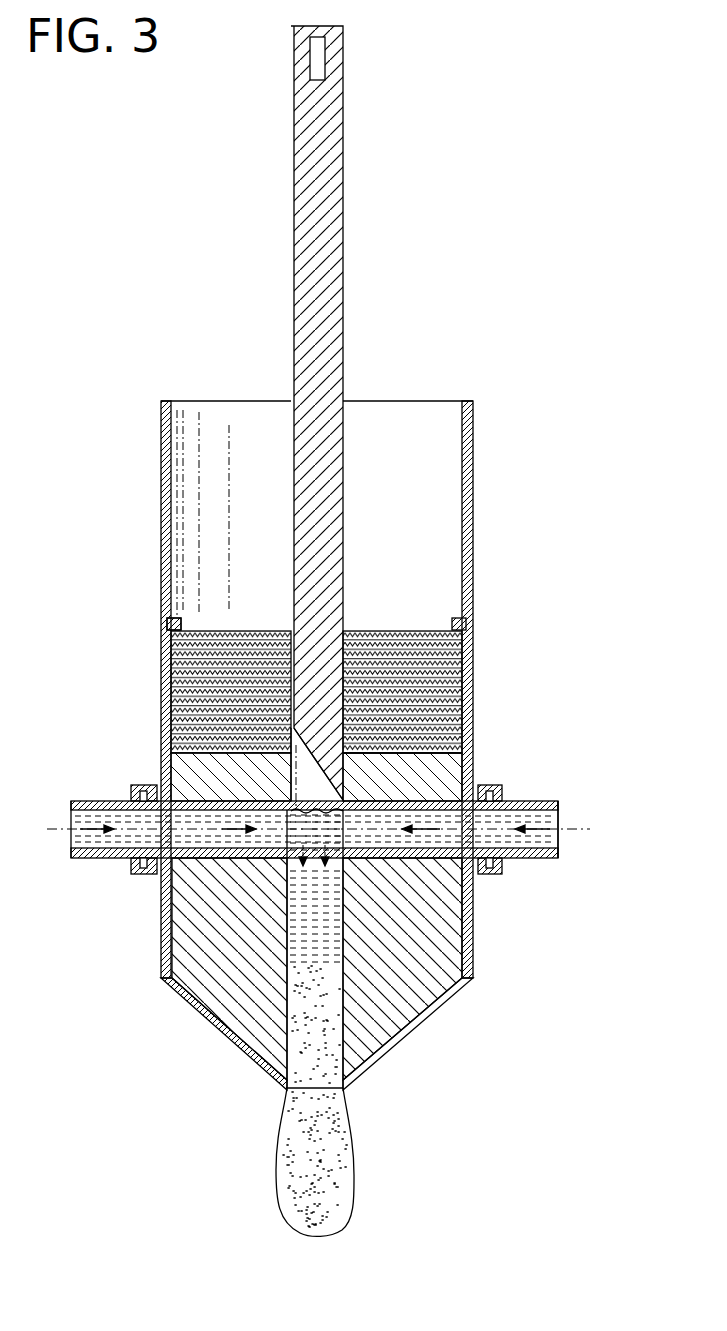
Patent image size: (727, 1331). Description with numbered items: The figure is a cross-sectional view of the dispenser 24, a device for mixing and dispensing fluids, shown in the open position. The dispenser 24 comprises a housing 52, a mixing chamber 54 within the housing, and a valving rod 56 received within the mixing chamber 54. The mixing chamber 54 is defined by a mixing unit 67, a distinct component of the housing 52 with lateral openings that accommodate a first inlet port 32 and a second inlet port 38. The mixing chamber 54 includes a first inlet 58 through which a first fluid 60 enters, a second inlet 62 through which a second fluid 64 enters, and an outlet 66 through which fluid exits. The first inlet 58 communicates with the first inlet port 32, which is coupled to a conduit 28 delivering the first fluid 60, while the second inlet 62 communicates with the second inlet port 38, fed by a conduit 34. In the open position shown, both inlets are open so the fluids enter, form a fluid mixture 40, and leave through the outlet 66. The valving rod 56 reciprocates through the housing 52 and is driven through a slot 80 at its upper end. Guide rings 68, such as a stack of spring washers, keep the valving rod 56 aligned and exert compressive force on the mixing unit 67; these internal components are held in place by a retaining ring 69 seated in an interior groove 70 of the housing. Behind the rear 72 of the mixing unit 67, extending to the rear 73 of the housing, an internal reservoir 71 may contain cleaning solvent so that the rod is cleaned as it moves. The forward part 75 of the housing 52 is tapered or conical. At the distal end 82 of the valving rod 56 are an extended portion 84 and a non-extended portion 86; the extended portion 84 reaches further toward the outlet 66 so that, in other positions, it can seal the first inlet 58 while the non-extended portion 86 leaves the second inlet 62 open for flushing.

The dispenser 24 is at (532, 271).
The conduit 28 is at (545, 801).
The first inlet port 32 is at (480, 812).
The conduit 34 is at (92, 801).
The second inlet port 38 is at (180, 840).
The fluid mixture 40 is at (308, 1160).
The housing 52 is at (474, 510).
The mixing chamber 54 is at (303, 795).
The valving rod 56 is at (291, 228).
The first inlet 58 is at (345, 828).
The first fluid 60 is at (513, 833).
The second inlet 62 is at (283, 822).
The second fluid 64 is at (105, 835).
The outlet 66 is at (345, 1089).
The mixing unit 67 is at (415, 998).
The guide rings 68 is at (253, 631).
The retaining ring 69 is at (183, 625).
The interior groove 70 is at (166, 624).
The internal reservoir 71 is at (427, 477).
The rear of mixing unit 72 is at (456, 760).
The rear of housing 73 is at (413, 401).
The forward part of housing 75 is at (242, 1046).
The slot 80 is at (328, 58).
The distal end of valving rod 82 is at (326, 752).
The extended portion 84 is at (373, 776).
The non-extended portion 86 is at (290, 770).